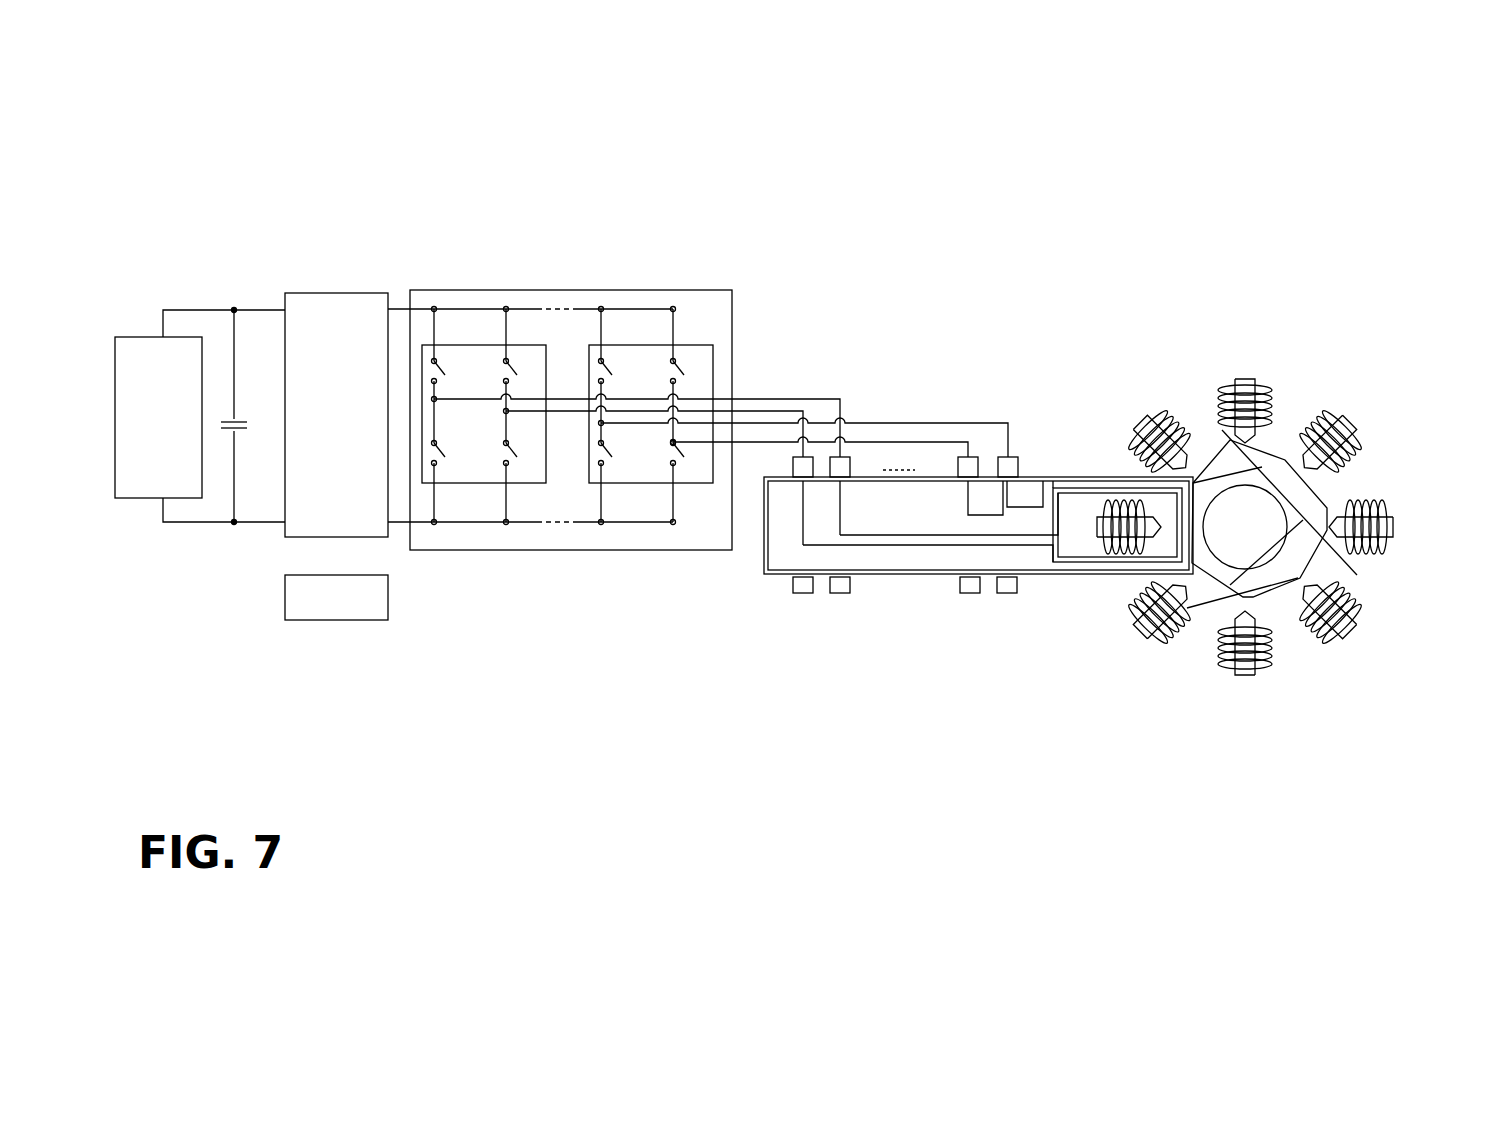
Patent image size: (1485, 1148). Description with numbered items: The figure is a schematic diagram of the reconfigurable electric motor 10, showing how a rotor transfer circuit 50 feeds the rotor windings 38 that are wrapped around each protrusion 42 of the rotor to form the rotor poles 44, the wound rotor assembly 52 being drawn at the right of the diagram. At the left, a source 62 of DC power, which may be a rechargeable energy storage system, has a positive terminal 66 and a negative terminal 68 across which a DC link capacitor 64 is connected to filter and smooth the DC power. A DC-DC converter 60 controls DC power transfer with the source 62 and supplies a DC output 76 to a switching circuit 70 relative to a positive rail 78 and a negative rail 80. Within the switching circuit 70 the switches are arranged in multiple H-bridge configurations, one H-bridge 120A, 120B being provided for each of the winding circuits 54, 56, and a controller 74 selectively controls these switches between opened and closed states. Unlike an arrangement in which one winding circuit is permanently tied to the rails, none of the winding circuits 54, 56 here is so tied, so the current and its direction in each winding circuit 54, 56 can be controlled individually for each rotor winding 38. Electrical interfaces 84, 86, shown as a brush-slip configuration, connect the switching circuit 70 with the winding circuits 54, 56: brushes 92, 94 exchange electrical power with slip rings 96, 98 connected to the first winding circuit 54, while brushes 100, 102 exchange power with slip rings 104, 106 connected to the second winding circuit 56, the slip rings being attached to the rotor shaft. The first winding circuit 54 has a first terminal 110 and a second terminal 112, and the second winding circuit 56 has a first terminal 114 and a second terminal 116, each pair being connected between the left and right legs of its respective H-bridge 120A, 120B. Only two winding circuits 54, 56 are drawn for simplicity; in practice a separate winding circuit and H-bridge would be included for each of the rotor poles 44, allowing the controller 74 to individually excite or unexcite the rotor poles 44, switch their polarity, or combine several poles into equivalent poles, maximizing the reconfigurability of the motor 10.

The electric motor 10 is at (1114, 165).
The rotor transfer circuit 50 is at (902, 238).
The stator assembly 52 is at (1410, 563).
The first winding circuit 54 is at (858, 524).
The second winding circuit 56 is at (1040, 493).
The DC-DC converter 60 is at (336, 415).
The source 62 is at (158, 417).
The DC link capacitor 64 is at (237, 430).
The positive terminal 66 is at (163, 336).
The negative terminal 68 is at (162, 498).
The switching circuit 70 is at (732, 292).
The controller 74 is at (336, 597).
The DC output 76 is at (408, 284).
The positive rail 78 is at (397, 307).
The negative rail 80 is at (397, 524).
The electrical interface 84 is at (856, 410).
The electrical interface 86 is at (1028, 434).
The brush 92 is at (958, 464).
The brush 94 is at (793, 466).
The slip ring 96 is at (803, 552).
The slip ring 98 is at (803, 482).
The brush 100 is at (1007, 455).
The brush 102 is at (968, 455).
The slip ring 104 is at (1007, 490).
The slip ring 106 is at (966, 484).
The first terminal 110 is at (840, 513).
The second terminal 112 is at (803, 527).
The first terminal 114 is at (1043, 522).
The second terminal 116 is at (988, 513).
The H-bridge configuration 120A is at (475, 345).
The H-bridge configuration 120B is at (628, 345).
The rotor winding 38 is at (1181, 460).
The protrusion 42 is at (1225, 400).
The rotor pole 44 is at (1252, 380).